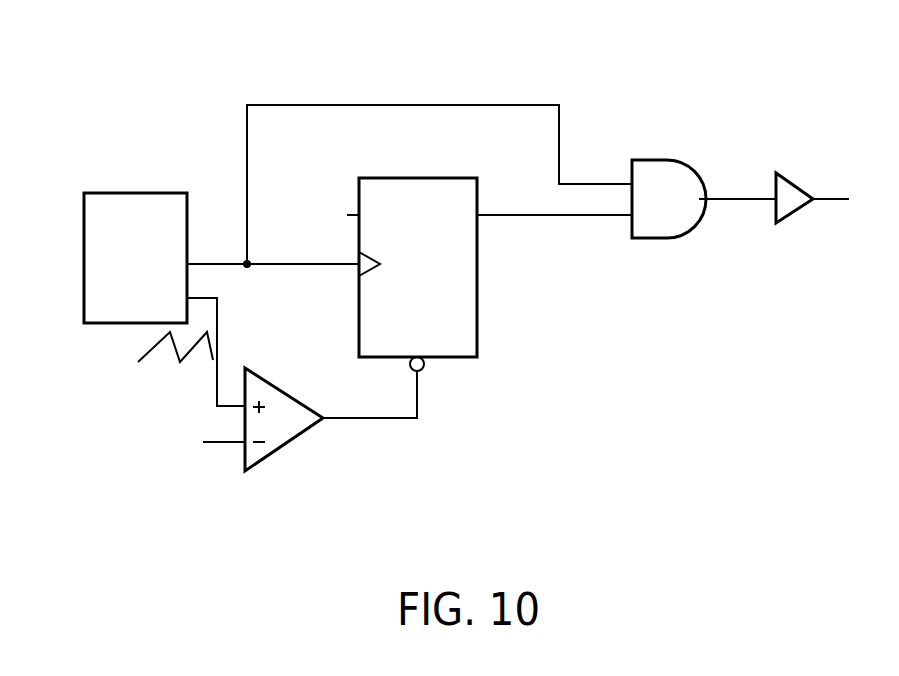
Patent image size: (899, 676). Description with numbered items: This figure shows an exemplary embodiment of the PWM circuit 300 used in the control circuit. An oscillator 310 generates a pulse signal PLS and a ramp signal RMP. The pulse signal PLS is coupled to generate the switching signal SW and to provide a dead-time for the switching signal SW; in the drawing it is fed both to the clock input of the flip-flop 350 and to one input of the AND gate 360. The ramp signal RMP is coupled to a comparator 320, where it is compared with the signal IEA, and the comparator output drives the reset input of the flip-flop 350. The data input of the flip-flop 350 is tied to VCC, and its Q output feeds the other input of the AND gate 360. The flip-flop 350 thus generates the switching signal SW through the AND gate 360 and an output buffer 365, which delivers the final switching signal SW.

The PWM circuit 300 is at (773, 68).
The oscillator 310 is at (94, 192).
The comparator 320 is at (294, 419).
The flip-flop 350 is at (446, 178).
The AND gate 360 is at (669, 217).
The output buffer 365 is at (804, 214).